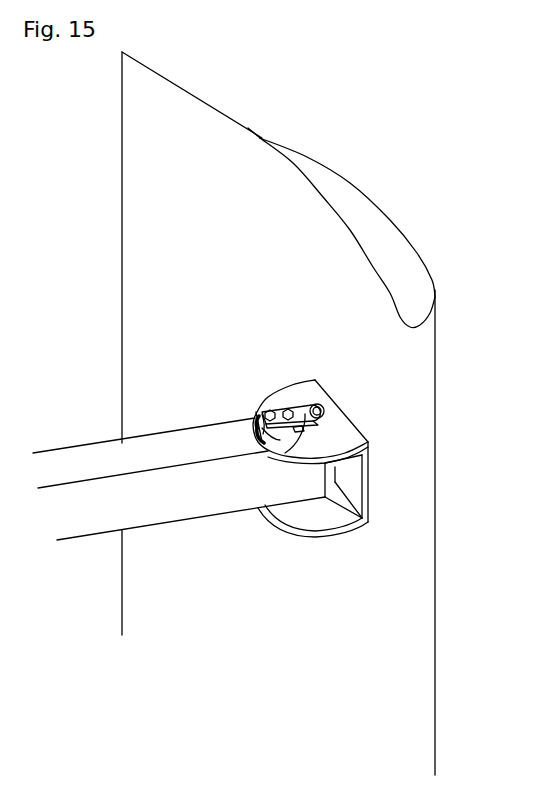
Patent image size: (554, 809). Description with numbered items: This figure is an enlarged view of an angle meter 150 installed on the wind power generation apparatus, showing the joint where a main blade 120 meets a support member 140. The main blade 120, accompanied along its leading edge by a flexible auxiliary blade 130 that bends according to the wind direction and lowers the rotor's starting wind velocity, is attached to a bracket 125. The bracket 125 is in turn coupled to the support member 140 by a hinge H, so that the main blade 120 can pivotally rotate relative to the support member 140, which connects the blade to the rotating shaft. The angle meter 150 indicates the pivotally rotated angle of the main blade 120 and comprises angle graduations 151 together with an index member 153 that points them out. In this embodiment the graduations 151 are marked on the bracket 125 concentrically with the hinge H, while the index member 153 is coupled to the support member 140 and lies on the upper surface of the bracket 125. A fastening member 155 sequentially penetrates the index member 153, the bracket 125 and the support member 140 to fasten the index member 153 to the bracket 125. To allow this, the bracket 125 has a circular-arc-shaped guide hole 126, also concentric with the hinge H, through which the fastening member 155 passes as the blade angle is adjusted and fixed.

The main blade 120 is at (348, 280).
The auxiliary blade 130 is at (186, 134).
The support member 140 is at (98, 451).
The bracket 125 is at (347, 440).
The guide hole 126 is at (301, 432).
The angle meter 150 is at (70, 342).
The angle graduations 151 is at (258, 436).
The index member 153 is at (259, 412).
The fastening member 155 is at (287, 410).
The hinge H is at (316, 404).